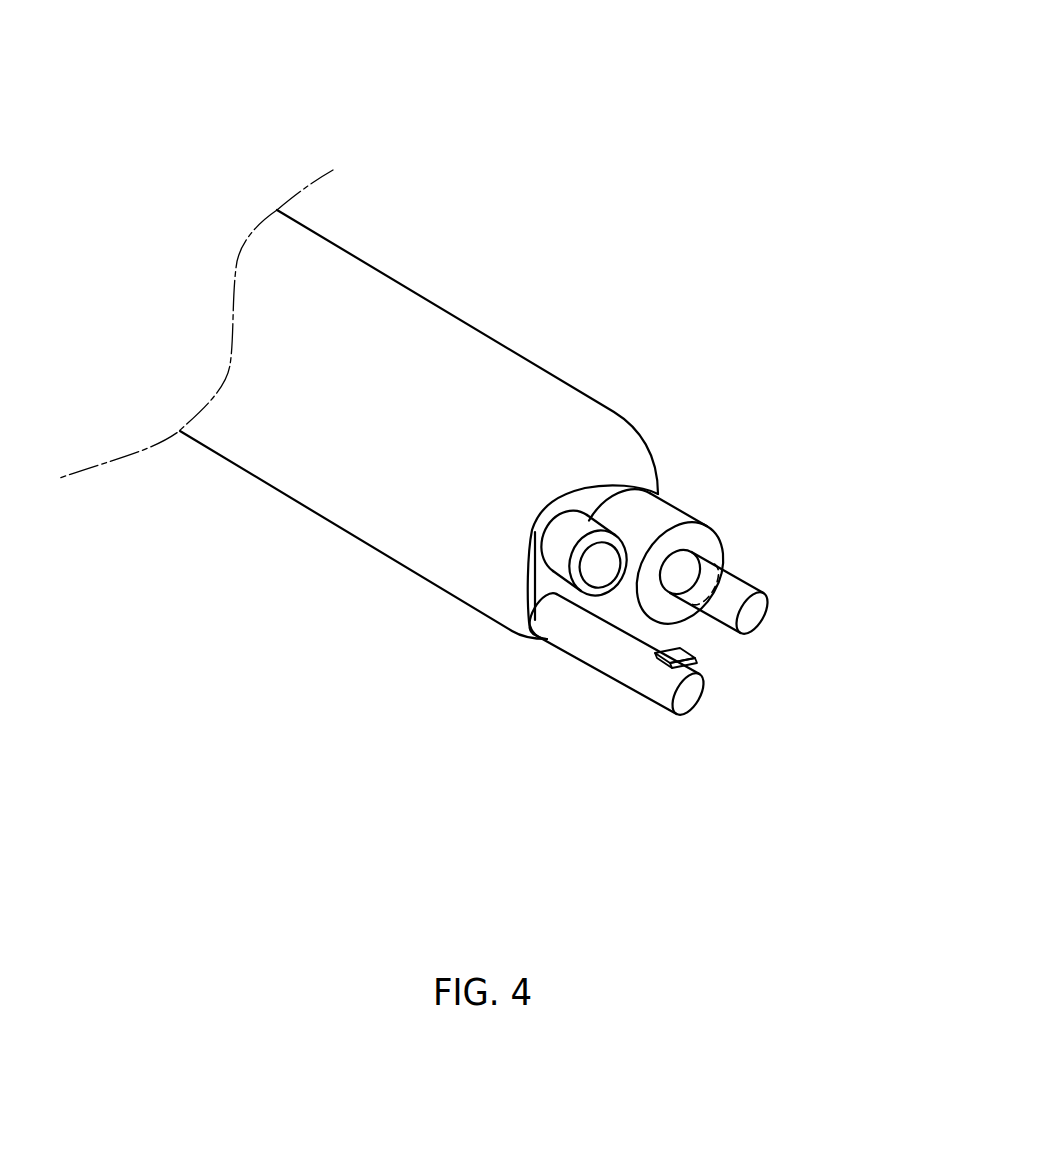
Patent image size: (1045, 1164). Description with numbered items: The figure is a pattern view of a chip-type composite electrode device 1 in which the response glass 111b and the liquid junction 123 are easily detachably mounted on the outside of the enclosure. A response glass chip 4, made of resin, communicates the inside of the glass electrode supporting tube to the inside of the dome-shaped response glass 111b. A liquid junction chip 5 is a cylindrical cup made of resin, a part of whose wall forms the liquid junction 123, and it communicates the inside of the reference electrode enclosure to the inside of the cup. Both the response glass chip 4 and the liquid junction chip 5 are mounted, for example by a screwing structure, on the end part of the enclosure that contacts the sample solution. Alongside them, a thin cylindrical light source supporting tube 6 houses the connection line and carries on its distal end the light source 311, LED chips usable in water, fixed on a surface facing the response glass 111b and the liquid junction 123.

The endoscope insertion portion 1 is at (538, 112).
The response glass chip 4 is at (683, 507).
The liquid junction chip 5 is at (577, 513).
The light source supporting tube 6 is at (612, 672).
The liquid junction 123 is at (578, 570).
The response glass 111b is at (752, 583).
The light source 311 is at (697, 659).